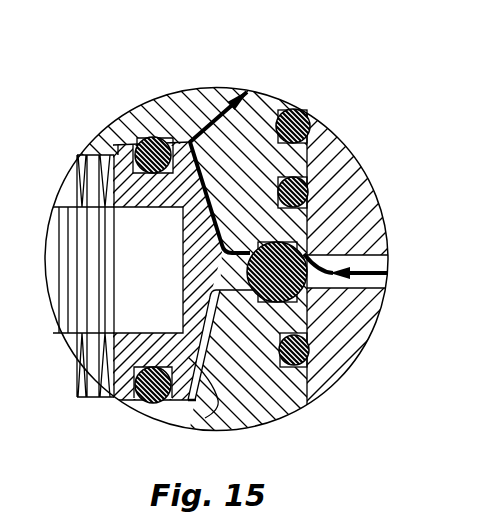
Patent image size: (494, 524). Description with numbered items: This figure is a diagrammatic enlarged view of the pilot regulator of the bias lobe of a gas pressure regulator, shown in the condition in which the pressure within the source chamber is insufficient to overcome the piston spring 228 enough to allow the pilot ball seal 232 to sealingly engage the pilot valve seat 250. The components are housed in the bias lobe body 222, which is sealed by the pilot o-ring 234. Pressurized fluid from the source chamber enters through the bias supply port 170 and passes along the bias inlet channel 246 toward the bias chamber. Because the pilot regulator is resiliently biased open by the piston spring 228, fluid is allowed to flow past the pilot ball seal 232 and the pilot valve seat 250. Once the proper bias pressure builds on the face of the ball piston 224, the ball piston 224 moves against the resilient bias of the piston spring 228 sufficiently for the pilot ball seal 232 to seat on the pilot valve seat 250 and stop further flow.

The bias supply port 170 is at (382, 261).
The bias lobe body 222 is at (158, 107).
The ball piston 224 is at (220, 409).
The piston spring 228 is at (84, 177).
The pilot ball seal 232 is at (307, 315).
The pilot o-ring 234 is at (308, 192).
The bias inlet channel 246 is at (204, 122).
The pilot valve seat 250 is at (278, 373).